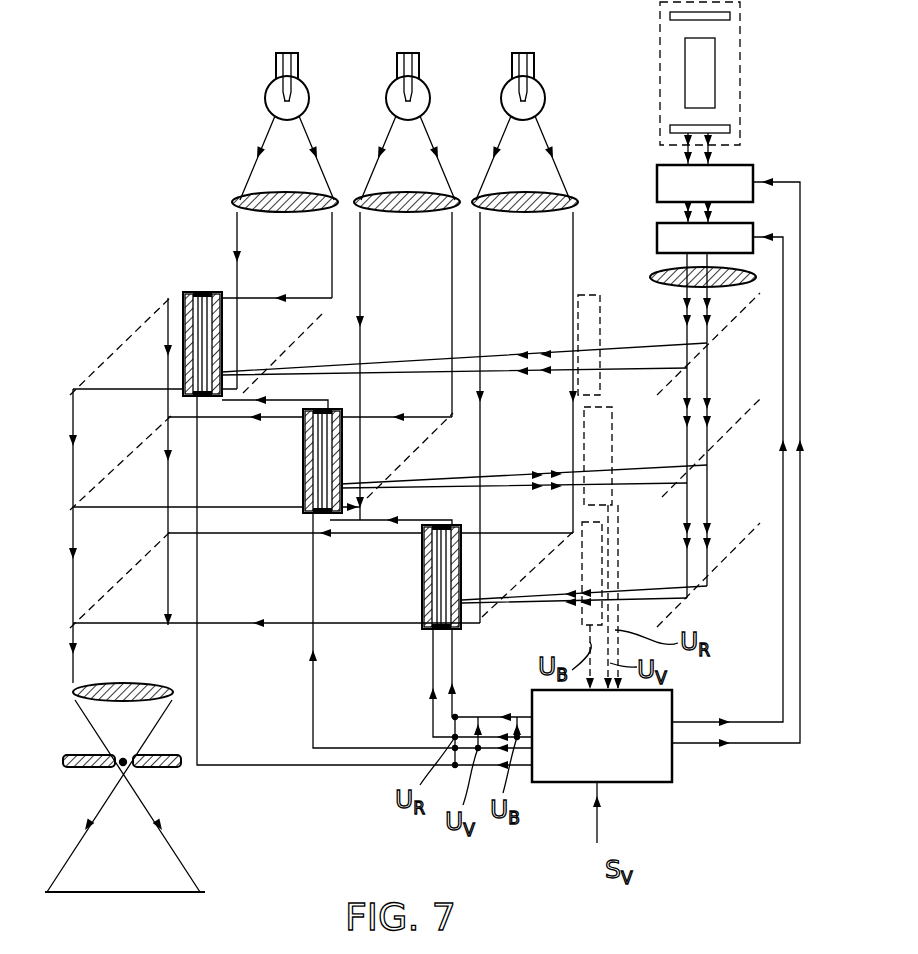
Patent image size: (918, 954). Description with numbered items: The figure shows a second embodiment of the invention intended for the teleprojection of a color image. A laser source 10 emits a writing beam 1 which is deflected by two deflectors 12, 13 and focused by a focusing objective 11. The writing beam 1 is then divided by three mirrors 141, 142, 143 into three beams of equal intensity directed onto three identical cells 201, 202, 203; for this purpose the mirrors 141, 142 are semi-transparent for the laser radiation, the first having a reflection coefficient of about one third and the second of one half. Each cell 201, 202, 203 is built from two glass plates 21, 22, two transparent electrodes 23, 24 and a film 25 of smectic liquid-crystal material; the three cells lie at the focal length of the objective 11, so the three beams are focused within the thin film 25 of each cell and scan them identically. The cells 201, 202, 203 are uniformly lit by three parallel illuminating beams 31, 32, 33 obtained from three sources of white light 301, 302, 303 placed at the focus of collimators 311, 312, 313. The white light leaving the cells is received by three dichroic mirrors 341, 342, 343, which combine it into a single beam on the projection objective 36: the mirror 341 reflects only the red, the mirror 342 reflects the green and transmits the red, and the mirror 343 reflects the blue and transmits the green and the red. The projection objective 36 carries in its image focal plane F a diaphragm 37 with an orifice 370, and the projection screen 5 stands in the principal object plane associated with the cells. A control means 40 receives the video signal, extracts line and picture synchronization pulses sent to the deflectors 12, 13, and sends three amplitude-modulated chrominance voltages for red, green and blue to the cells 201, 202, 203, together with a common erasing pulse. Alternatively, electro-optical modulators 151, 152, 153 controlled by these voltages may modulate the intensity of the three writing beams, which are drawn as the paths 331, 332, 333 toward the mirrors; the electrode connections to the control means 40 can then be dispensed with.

The writing beam 1 is at (683, 153).
The projection screen 5 is at (203, 892).
The laser source 10 is at (727, 68).
The focusing objective 11 is at (655, 275).
The deflector 12 is at (742, 172).
The deflector 13 is at (742, 232).
The glass plate 21 is at (185, 374).
The glass plate 22 is at (230, 266).
The transparent electrode 23 is at (185, 345).
The transparent electrode 24 is at (195, 292).
The film of liquid crystal material 25 is at (210, 357).
The illuminating beam 31 is at (252, 228).
The illuminating beam 32 is at (387, 343).
The illuminating beam 33 is at (553, 250).
The projection objective 36 is at (88, 706).
The diaphragm 37 is at (92, 768).
The control means 40 is at (645, 775).
The mirror 141 is at (717, 339).
The mirror 142 is at (713, 457).
The mirror 143 is at (710, 570).
The electro-optical modulator 151 is at (600, 345).
The electro-optical modulator 152 is at (593, 452).
The electro-optical modulator 153 is at (593, 555).
The cell 201 is at (183, 294).
The cell 202 is at (312, 408).
The cell 203 is at (422, 540).
The source of white light 301 is at (285, 52).
The source of white light 302 is at (406, 52).
The source of white light 303 is at (521, 52).
The collimator 311 is at (268, 195).
The collimator 312 is at (390, 195).
The collimator 313 is at (508, 195).
The light beam 331 is at (464, 359).
The dichroic mirror 332 is at (453, 440).
The dichroic mirror 333 is at (548, 562).
The dichroic mirror 341 is at (143, 318).
The dichroic mirror 342 is at (110, 470).
The dichroic mirror 343 is at (110, 593).
The orifice 370 is at (128, 768).
The focal plane F is at (130, 755).